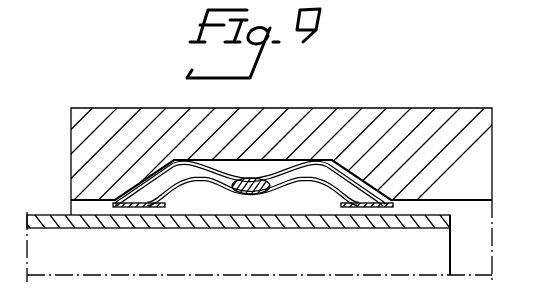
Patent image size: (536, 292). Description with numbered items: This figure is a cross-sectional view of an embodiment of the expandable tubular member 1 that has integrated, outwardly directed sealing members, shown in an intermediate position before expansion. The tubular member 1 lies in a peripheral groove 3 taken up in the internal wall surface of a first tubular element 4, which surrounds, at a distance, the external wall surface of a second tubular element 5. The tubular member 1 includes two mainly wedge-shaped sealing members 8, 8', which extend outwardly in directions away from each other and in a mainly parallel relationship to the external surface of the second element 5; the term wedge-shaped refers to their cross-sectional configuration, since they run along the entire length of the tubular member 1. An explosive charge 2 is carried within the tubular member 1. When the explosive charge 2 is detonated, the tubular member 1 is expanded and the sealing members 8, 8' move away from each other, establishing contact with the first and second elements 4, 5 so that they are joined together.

The expandable tubular member 1 is at (200, 196).
The explosive charge 2 is at (263, 197).
The peripheral groove 3 is at (268, 159).
The first tubular element 4 is at (127, 120).
The second tubular element 5 is at (41, 222).
The wedge-shaped sealing member 8 is at (140, 232).
The wedge-shaped sealing member 8' is at (368, 232).